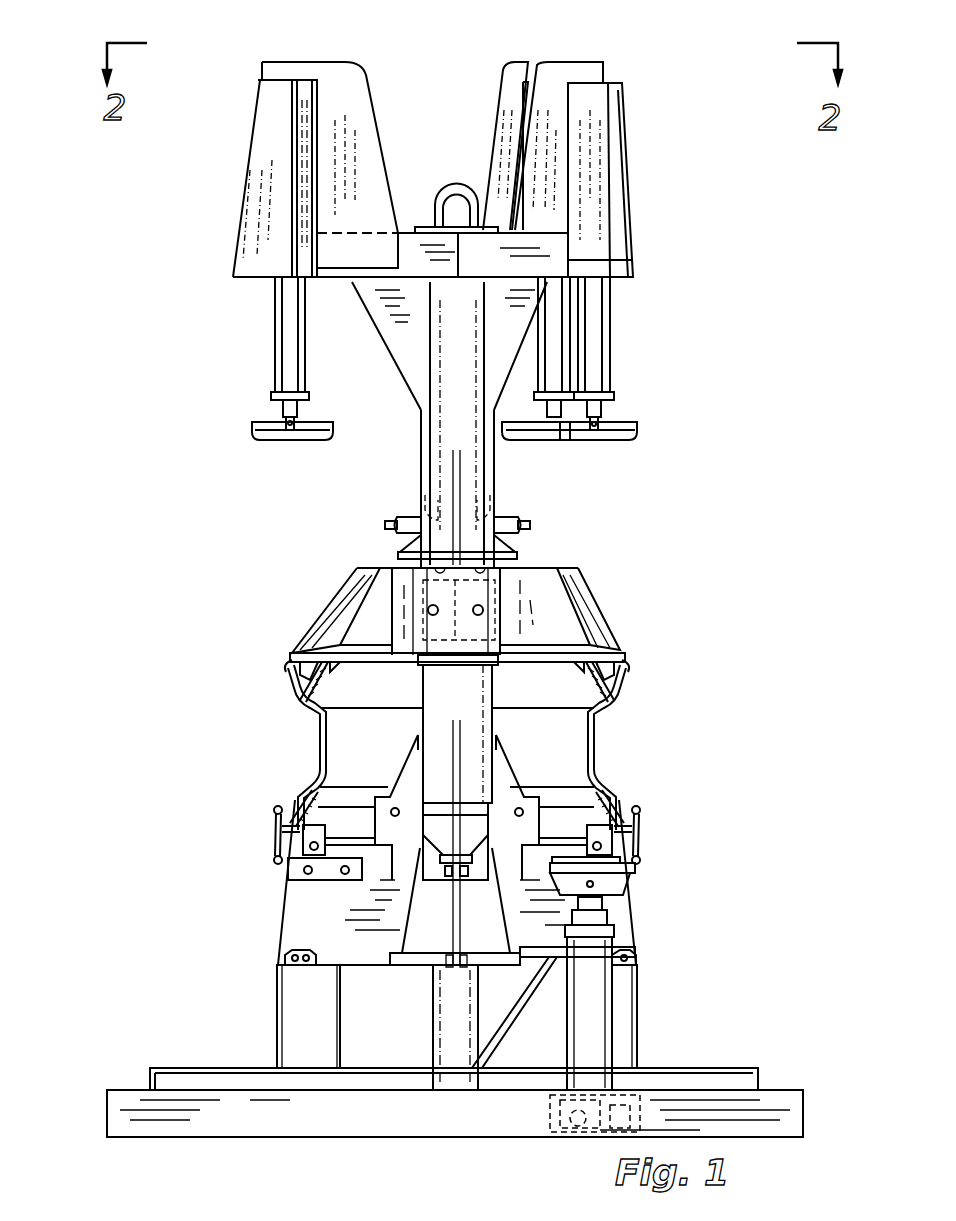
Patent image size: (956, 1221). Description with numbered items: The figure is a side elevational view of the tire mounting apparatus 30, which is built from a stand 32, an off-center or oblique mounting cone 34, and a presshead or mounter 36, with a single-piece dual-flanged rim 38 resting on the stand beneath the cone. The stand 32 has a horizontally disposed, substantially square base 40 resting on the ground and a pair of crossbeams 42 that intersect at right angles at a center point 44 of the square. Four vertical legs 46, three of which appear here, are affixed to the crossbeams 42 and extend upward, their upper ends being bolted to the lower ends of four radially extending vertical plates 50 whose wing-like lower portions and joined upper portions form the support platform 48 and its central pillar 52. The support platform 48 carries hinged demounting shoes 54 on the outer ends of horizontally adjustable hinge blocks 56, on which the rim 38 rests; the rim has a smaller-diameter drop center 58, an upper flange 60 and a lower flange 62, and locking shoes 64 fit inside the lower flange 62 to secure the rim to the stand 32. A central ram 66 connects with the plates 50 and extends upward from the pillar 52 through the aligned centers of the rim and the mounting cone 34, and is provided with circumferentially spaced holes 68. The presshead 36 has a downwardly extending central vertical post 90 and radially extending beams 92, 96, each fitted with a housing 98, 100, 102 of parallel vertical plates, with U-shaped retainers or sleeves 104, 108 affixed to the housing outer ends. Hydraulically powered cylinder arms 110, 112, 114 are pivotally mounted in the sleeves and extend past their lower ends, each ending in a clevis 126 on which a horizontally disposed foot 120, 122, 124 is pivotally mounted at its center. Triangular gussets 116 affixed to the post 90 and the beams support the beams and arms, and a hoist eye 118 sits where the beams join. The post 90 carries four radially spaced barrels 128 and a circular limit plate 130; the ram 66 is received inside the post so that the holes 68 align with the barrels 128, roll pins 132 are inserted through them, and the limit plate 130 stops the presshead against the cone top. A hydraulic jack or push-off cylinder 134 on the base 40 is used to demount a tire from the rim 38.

The tire mounting apparatus 30 is at (190, 190).
The stand 32 is at (195, 923).
The mounting cone 34 is at (596, 590).
The presshead 36 is at (655, 197).
The rim 38 is at (590, 765).
The base 40 is at (280, 1118).
The crossbeams 42 is at (155, 1068).
The center point 44 is at (470, 1135).
The vertical legs 46 is at (278, 990).
The support platform 48 is at (443, 843).
The vertical plates 50 is at (285, 925).
The central pillar 52 is at (608, 822).
The demounting shoes 54 is at (273, 811).
The hinge blocks 56 is at (290, 875).
The drop center 58 is at (318, 733).
The upper flange 60 is at (298, 655).
The lower flange 62 is at (300, 812).
The locking shoes 64 is at (302, 838).
The central ram 66 is at (475, 510).
The holes 68 is at (478, 608).
The vertical post 90 is at (432, 442).
The beam 92 is at (545, 258).
The beam 96 is at (335, 280).
The housing 98 is at (555, 95).
The housing 100 is at (508, 75).
The housing 102 is at (352, 110).
The retainer 104 is at (620, 241).
The retainer 108 is at (262, 133).
The cylinder arm 110 is at (598, 360).
The cylinder arm 112 is at (550, 358).
The cylinder arm 114 is at (285, 335).
The gussets 116 is at (488, 368).
The hoist eye 118 is at (455, 190).
The foot 120 is at (570, 442).
The foot 122 is at (530, 445).
The foot 124 is at (290, 440).
The clevis 126 is at (280, 408).
The barrels 128 is at (410, 532).
The limit plate 130 is at (400, 553).
The roll pins 132 is at (385, 525).
The push-off cylinder 134 is at (590, 980).